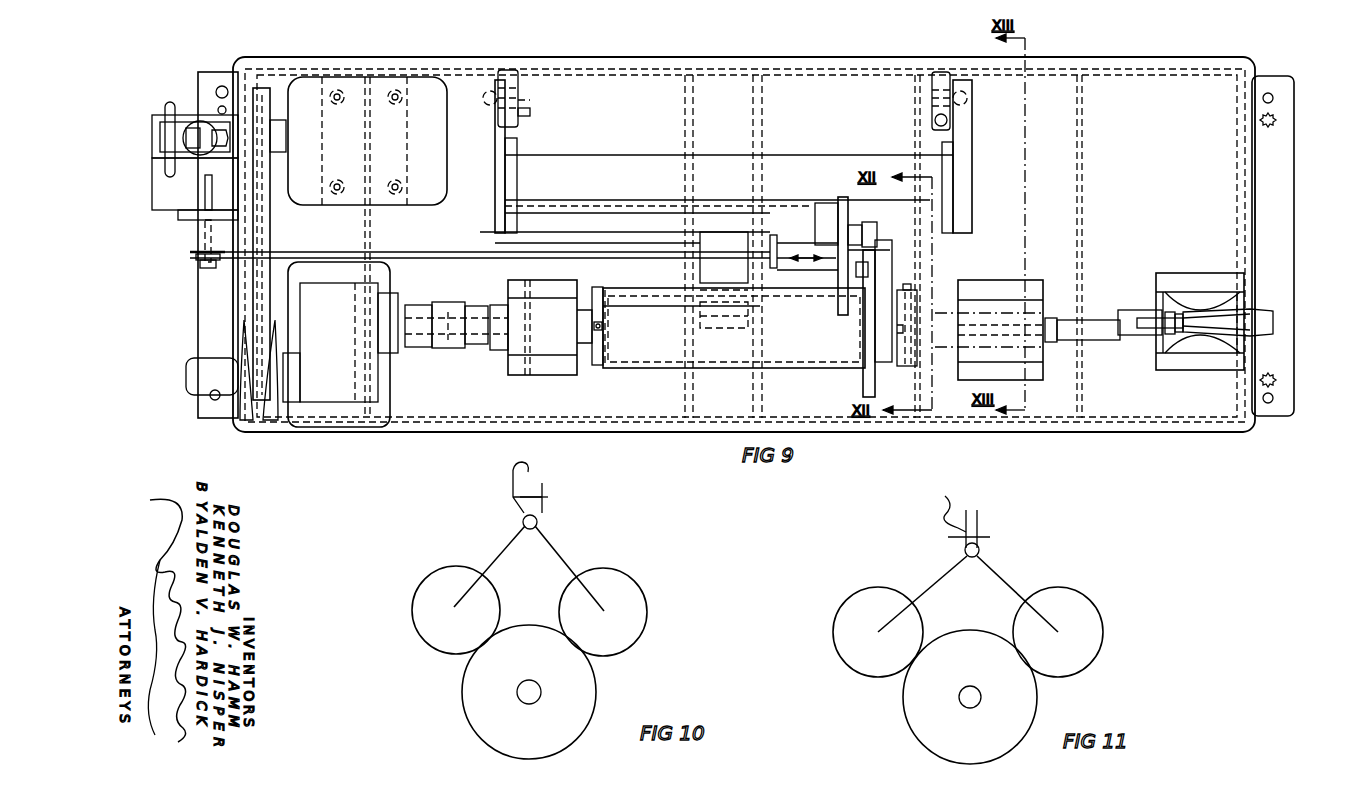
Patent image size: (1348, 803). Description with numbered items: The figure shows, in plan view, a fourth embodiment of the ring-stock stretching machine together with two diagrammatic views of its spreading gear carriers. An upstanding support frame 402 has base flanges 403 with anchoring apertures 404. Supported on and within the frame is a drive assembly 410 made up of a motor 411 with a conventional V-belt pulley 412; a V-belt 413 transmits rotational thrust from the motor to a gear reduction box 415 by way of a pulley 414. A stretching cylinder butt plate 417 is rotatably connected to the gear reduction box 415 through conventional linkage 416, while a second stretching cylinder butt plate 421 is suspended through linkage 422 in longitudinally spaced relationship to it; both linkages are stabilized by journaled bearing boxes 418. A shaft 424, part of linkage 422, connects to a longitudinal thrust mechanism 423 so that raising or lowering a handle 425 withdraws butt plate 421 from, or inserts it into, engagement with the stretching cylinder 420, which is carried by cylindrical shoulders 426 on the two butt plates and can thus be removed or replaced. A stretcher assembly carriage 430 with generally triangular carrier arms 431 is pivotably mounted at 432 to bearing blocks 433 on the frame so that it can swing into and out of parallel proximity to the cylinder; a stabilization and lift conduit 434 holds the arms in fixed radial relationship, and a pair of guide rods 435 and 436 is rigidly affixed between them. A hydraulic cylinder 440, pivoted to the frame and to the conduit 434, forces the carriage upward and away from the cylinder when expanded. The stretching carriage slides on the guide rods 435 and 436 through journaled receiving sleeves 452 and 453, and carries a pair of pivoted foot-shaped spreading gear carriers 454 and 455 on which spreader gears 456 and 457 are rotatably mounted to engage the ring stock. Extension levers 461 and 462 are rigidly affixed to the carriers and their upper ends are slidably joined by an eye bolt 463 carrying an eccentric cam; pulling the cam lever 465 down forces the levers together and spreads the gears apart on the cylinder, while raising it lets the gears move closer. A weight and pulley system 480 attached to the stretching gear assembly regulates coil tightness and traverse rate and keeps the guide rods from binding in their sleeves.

In FIG. 9, the upstanding support frame 402 is at (1258, 66).
In FIG. 9, the base flanges 403 is at (1295, 198).
In FIG. 9, the anchoring apertures 404 is at (1276, 96).
In FIG. 9, the drive assembly 410 is at (238, 284).
In FIG. 9, the motor 411 is at (383, 80).
In FIG. 9, the V-belt pulley 412 is at (270, 88).
In FIG. 9, the V-belt 413 is at (250, 300).
In FIG. 9, the pulley 414 is at (272, 420).
In FIG. 9, the gear reduction box 415 is at (390, 415).
In FIG. 9, the linkage 416 is at (497, 352).
In FIG. 9, the stretching cylinder butt plate 417 is at (598, 368).
In FIG. 9, the bearing boxes 418 is at (555, 380).
In FIG. 9, the stretching cylinder 420 is at (752, 368).
In FIG. 10, the stretching cylinder 420 is at (596, 697).
In FIG. 11, the stretching cylinder 420 is at (970, 697).
In FIG. 9, the second stretching cylinder butt plate 421 is at (917, 362).
In FIG. 9, the linkage 422 is at (1062, 342).
In FIG. 9, the longitudinal thrust mechanism 423 is at (1205, 372).
In FIG. 9, the shaft 424 is at (1115, 295).
In FIG. 9, the handle 425 is at (1255, 322).
In FIG. 9, the cylindrical shoulders 426 is at (606, 368).
In FIG. 9, the stretcher assembly carriage 430 is at (972, 137).
In FIG. 9, the triangular carrier arms 431 is at (490, 200).
In FIG. 9, the pivot 432 is at (530, 113).
In FIG. 9, the bearing blocks 433 is at (510, 72).
In FIG. 9, the stabilization and lift conduit 434 is at (717, 190).
In FIG. 9, the guide rod 435 is at (553, 210).
In FIG. 9, the guide rod 436 is at (575, 245).
In FIG. 9, the hydraulic cylinder 440 is at (748, 316).
In FIG. 9, the receiving sleeve 452 is at (836, 200).
In FIG. 11, the receiving sleeve 452 is at (878, 632).
In FIG. 9, the receiving sleeve 453 is at (775, 268).
In FIG. 10, the foot-shaped spreading gear carrier 454 is at (510, 540).
In FIG. 11, the foot-shaped spreading gear carrier 454 is at (928, 582).
In FIG. 10, the foot-shaped spreading gear carrier 455 is at (560, 546).
In FIG. 11, the foot-shaped spreading gear carrier 455 is at (1013, 580).
In FIG. 10, the spreader gear 456 is at (418, 630).
In FIG. 10, the spreader gear 457 is at (650, 612).
In FIG. 11, the spreader gear 457 is at (1058, 632).
In FIG. 10, the extension lever 461 is at (516, 509).
In FIG. 11, the extension lever 461 is at (965, 542).
In FIG. 10, the extension lever 462 is at (550, 517).
In FIG. 11, the extension lever 462 is at (990, 537).
In FIG. 10, the eye bolt 463 is at (540, 492).
In FIG. 11, the eye bolt 463 is at (985, 522).
In FIG. 10, the cam lever 465 is at (536, 468).
In FIG. 11, the cam lever 465 is at (942, 505).
In FIG. 9, the weight and pulley system 480 is at (190, 255).